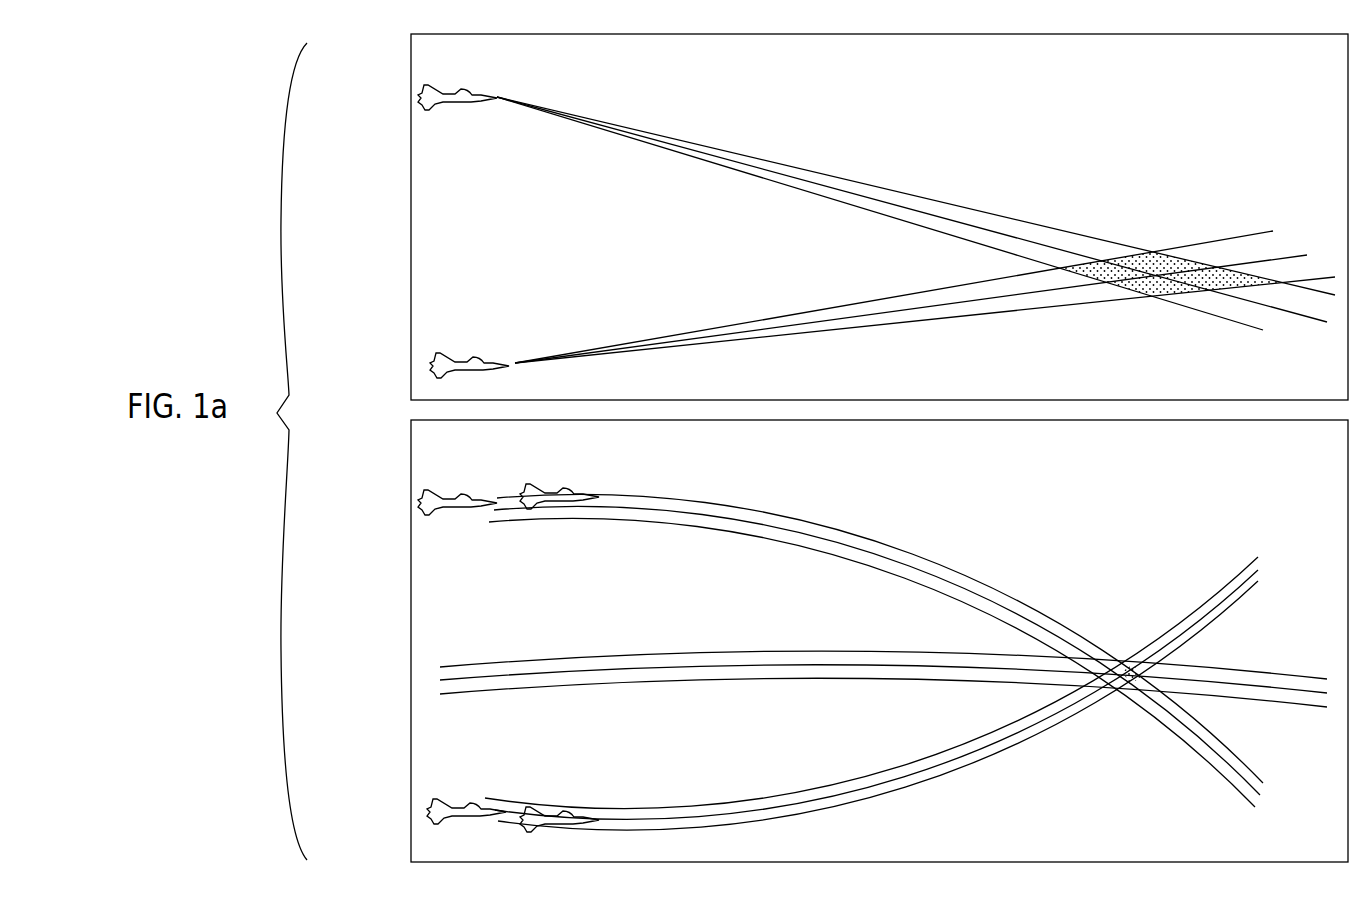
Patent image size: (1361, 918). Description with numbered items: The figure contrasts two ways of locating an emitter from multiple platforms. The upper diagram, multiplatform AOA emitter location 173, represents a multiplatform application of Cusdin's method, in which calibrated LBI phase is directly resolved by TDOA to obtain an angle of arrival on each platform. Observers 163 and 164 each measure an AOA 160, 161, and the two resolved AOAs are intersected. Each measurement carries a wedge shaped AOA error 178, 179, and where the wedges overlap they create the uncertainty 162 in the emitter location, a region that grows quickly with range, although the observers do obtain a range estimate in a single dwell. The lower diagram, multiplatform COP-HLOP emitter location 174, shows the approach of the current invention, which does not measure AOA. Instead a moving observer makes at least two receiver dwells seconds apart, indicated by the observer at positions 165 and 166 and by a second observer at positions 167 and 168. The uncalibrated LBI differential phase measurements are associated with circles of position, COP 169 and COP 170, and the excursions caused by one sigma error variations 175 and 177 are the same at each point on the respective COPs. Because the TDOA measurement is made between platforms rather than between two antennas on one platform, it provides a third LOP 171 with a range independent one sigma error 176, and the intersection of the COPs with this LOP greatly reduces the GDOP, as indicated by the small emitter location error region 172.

The AOA 160 is at (999, 232).
The AOA 161 is at (1048, 290).
The uncertainty in the emitter location 162 is at (1157, 283).
The observer 163 is at (490, 96).
The second platform aircraft 164 is at (492, 362).
The observer 165 is at (470, 497).
The moving observer 166 is at (575, 492).
The moving observer 167 is at (482, 811).
The moving observer 168 is at (560, 819).
The COP 169 is at (877, 550).
The COP 170 is at (933, 780).
The LOP 171 is at (753, 670).
The emitter location error region 172 is at (1130, 665).
The multiplatform AOA emitter location 173 is at (410, 166).
The multiplatform COP-HLOP emitter location 174 is at (410, 549).
The one sigma error variation 175 is at (876, 650).
The set of hyperbolic lines of position with error bounds 176 is at (883, 666).
The one sigma error variation 177 is at (871, 696).
The wedge shaped AOA error 178 is at (916, 213).
The wedge shaped AOA error 179 is at (925, 298).